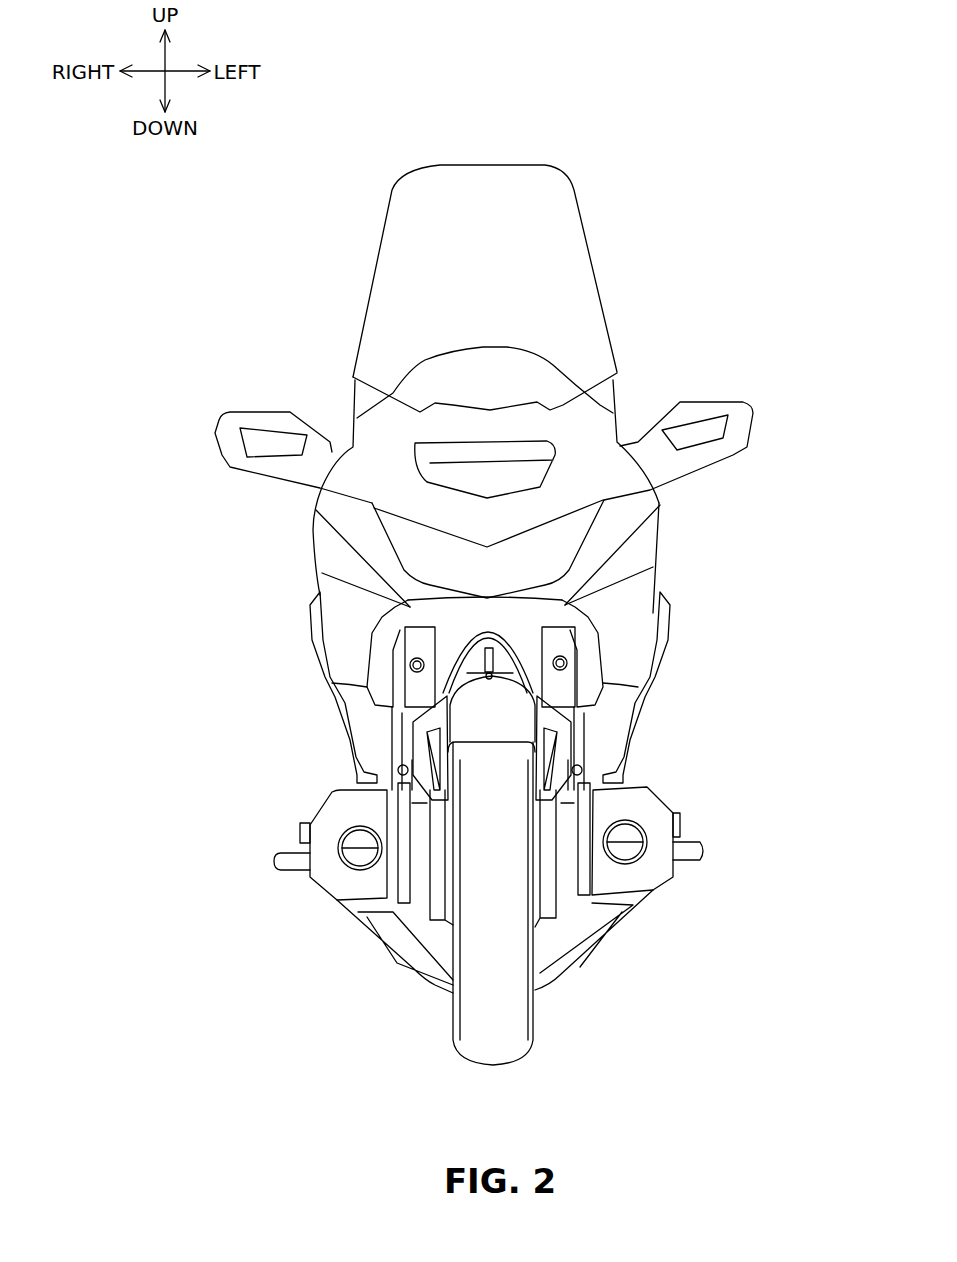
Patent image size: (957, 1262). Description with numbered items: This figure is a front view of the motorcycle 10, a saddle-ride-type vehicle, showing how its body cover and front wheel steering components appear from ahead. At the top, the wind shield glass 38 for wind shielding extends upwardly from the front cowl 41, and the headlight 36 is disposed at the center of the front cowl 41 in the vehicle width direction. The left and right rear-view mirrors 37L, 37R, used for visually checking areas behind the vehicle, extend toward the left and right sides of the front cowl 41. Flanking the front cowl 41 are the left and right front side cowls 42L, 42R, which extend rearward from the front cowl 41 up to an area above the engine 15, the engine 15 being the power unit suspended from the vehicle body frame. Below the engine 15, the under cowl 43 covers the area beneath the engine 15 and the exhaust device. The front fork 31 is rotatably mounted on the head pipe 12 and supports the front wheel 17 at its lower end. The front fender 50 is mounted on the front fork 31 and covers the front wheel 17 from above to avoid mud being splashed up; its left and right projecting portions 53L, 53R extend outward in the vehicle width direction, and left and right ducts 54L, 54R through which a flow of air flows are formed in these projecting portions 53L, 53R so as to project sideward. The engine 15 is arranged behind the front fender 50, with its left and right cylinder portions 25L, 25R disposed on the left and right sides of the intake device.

The motorcycle 10 is at (605, 165).
The wind shield glass 38 is at (481, 178).
The front cowl 41 is at (612, 482).
The headlight 36 is at (580, 543).
The right rear-view mirror 37R is at (222, 432).
The left rear-view mirror 37L is at (743, 422).
The right front side cowl 42R is at (345, 607).
The left front side cowl 42L is at (635, 603).
The head pipe 12 is at (493, 640).
The front fender 50 is at (573, 723).
The right projecting portion 53R is at (410, 745).
The left projecting portion 53L is at (560, 737).
The right duct 54R is at (427, 746).
The left duct 54L is at (552, 750).
The engine 15 is at (665, 887).
The right cylinder portion 25R is at (337, 809).
The left cylinder portion 25L is at (647, 803).
The front fork 31 is at (445, 915).
The under cowl 43 is at (570, 960).
The front wheel 17 is at (497, 1057).